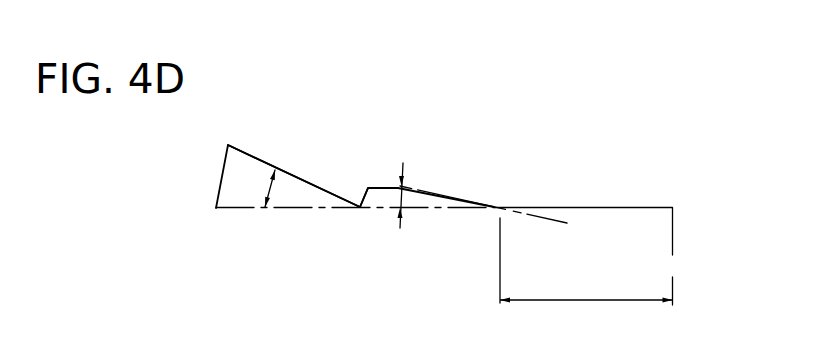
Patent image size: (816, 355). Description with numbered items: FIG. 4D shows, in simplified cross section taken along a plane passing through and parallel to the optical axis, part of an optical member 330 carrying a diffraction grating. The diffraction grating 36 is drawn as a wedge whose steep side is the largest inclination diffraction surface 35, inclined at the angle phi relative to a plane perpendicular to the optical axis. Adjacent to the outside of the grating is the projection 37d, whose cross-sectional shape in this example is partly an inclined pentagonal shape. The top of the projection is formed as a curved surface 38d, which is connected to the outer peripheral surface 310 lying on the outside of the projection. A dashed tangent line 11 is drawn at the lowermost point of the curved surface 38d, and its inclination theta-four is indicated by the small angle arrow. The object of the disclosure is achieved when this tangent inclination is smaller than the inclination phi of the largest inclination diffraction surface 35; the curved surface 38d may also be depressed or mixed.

The diffraction grating 36 is at (236, 177).
The largest inclination diffraction surface 35 is at (315, 185).
The curved surface 38d is at (380, 189).
The projection 37d is at (369, 206).
The optical axis reference line 11 is at (425, 192).
The optical member 330 is at (660, 230).
The outer peripheral surface 310 is at (586, 260).